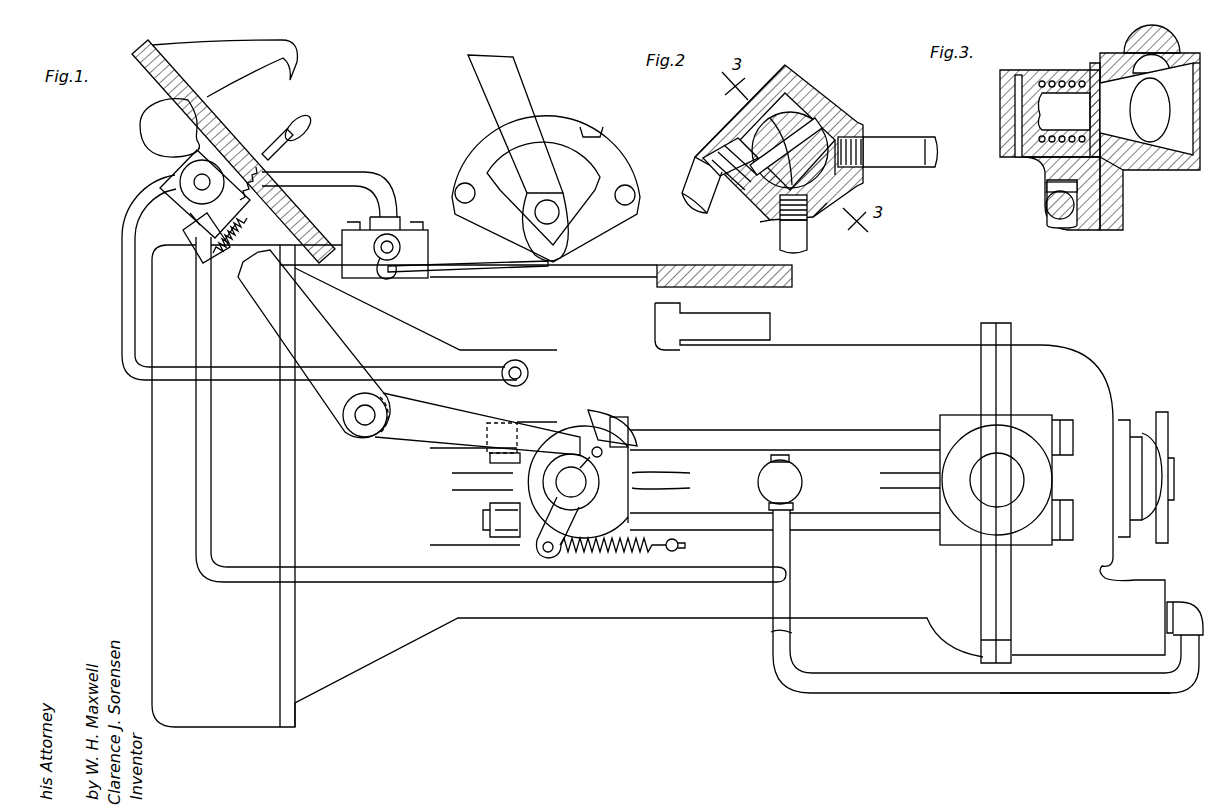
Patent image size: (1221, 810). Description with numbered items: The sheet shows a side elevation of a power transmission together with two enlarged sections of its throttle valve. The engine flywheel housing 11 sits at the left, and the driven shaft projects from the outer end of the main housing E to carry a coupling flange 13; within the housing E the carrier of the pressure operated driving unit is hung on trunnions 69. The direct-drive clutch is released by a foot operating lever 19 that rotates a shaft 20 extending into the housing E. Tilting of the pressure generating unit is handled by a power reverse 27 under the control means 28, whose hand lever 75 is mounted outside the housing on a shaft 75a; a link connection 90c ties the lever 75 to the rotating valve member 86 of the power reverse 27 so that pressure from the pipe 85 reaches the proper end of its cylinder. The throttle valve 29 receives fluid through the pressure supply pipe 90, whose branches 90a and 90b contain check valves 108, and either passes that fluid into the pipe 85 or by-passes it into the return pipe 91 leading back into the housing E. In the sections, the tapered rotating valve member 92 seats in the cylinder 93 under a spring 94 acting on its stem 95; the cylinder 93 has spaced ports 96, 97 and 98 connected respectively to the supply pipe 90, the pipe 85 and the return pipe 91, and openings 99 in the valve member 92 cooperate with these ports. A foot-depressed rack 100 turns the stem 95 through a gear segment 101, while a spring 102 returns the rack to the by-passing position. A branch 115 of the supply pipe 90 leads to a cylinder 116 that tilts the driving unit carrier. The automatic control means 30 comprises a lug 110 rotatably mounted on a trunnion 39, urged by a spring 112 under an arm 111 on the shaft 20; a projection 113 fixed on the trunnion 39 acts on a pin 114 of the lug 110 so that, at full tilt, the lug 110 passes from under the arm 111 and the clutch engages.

In FIG. 1, the housing 11 is at (567, 486).
In FIG. 1, the coupling flange 13 is at (1160, 412).
In FIG. 1, the operating lever 19 is at (268, 278).
In FIG. 1, the shaft 20 is at (362, 425).
In FIG. 1, the power reverse 27 is at (410, 224).
In FIG. 1, the control means 28 is at (594, 183).
In FIG. 1, the throttle valve 29 is at (152, 184).
In FIG. 2, the throttle valve 29 is at (851, 103).
In FIG. 3, the throttle valve 29 is at (1066, 56).
In FIG. 1, the automatic control means 30 is at (618, 416).
In FIG. 1, the trunnion 39 is at (565, 485).
In FIG. 1, the trunnions 69 is at (1006, 493).
In FIG. 1, the hand lever 75 is at (518, 158).
In FIG. 1, the shaft 75a is at (560, 212).
In FIG. 1, the pipe 85 is at (352, 172).
In FIG. 2, the pipe 85 is at (905, 155).
In FIG. 1, the rotating valve member 86 is at (382, 278).
In FIG. 1, the pressure supply pipe 90 is at (210, 503).
In FIG. 2, the pressure supply pipe 90 is at (800, 250).
In FIG. 1, the branch 90a is at (792, 545).
In FIG. 1, the branch 90b is at (778, 635).
In FIG. 1, the link connection 90c is at (450, 266).
In FIG. 1, the return pipe 91 is at (258, 380).
In FIG. 2, the return pipe 91 is at (705, 205).
In FIG. 2, the rotating valve member 92 is at (836, 147).
In FIG. 3, the rotating valve member 92 is at (1150, 109).
In FIG. 2, the cylinder 93 is at (768, 200).
In FIG. 3, the cylinder 93 is at (1125, 140).
In FIG. 3, the spring 94 is at (1042, 160).
In FIG. 1, the stem 95 is at (198, 192).
In FIG. 3, the stem 95 is at (1064, 111).
In FIG. 2, the port 96 is at (818, 212).
In FIG. 2, the port 97 is at (862, 143).
In FIG. 2, the port 98 is at (745, 138).
In FIG. 3, the port 98 is at (1143, 66).
In FIG. 2, the openings 99 is at (789, 150).
In FIG. 3, the openings 99 is at (1150, 110).
In FIG. 1, the rack 100 is at (296, 150).
In FIG. 3, the rack 100 is at (1050, 214).
In FIG. 1, the gear segment 101 is at (232, 158).
In FIG. 3, the gear segment 101 is at (1048, 187).
In FIG. 1, the spring 102 is at (250, 236).
In FIG. 1, the check valves 108 is at (804, 482).
In FIG. 1, the lug 110 is at (632, 420).
In FIG. 1, the arm 111 is at (468, 428).
In FIG. 1, the spring 112 is at (636, 560).
In FIG. 1, the projection 113 is at (490, 462).
In FIG. 1, the pin 114 is at (602, 455).
In FIG. 1, the branch 115 is at (818, 695).
In FIG. 1, the cylinder 116 is at (1160, 616).
In FIG. 1, the housing E is at (866, 349).